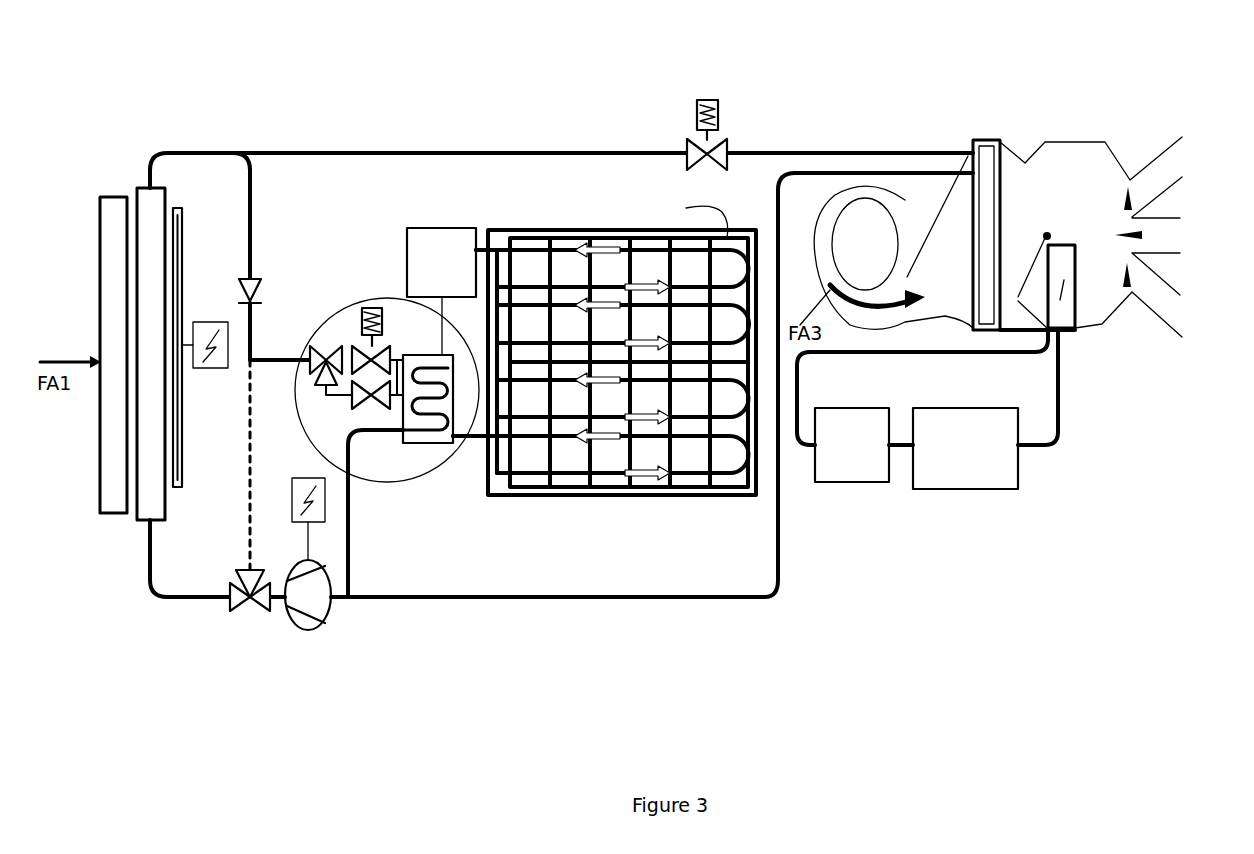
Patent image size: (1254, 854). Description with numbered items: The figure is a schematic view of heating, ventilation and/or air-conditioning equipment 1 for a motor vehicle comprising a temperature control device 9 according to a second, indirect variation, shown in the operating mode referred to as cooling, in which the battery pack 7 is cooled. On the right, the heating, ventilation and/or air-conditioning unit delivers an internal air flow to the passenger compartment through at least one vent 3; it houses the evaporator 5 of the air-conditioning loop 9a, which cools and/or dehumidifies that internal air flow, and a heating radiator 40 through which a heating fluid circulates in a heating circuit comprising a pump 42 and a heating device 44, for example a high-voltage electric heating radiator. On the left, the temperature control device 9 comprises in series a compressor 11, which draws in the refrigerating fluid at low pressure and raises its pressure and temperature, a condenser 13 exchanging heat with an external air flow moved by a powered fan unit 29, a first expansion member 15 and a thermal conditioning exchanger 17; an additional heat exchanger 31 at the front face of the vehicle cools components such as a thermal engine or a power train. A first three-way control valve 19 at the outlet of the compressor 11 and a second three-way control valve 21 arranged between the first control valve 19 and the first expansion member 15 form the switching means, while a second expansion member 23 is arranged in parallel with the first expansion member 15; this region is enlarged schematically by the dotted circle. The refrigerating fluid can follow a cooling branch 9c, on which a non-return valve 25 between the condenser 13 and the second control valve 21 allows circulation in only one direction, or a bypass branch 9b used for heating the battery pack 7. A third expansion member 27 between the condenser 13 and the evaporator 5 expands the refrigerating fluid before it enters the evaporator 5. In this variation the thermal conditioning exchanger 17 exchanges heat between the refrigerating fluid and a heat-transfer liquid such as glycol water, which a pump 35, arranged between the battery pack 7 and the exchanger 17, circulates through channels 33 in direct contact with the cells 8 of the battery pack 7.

The heating, ventilation and/or air-conditioning equipment 1 is at (850, 92).
The vent 3 is at (1175, 160).
The evaporator 5 is at (982, 251).
The battery pack 7 is at (576, 210).
The cells 8 is at (660, 496).
The temperature control device 9 is at (263, 135).
The air-conditioning loop 9a is at (346, 150).
The bypass branch 9b is at (236, 525).
The cooling branch 9c is at (262, 196).
The compressor 11 is at (306, 630).
The condenser 13 is at (145, 194).
The first expansion member 15 is at (347, 312).
The thermal conditioning exchanger 17 is at (420, 446).
The first control valve 19 is at (248, 612).
The second control valve 21 is at (314, 347).
The second expansion member 23 is at (345, 406).
The non-return valve 25 is at (262, 284).
The third expansion member 27 is at (707, 99).
The powered fan unit 29 is at (184, 472).
The additional heat exchanger 31 is at (100, 228).
The channels 33 is at (726, 478).
The pump 35 is at (441, 291).
The heating radiator 40 is at (1075, 318).
The pump 42 is at (852, 445).
The heating device 44 is at (965, 448).